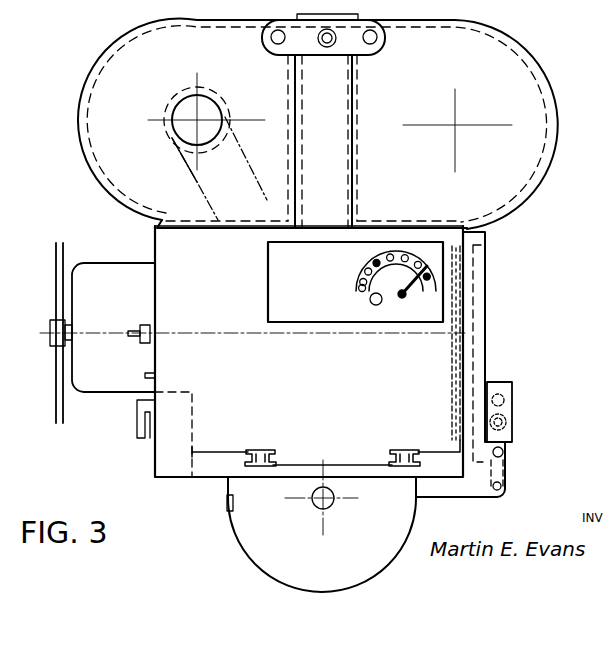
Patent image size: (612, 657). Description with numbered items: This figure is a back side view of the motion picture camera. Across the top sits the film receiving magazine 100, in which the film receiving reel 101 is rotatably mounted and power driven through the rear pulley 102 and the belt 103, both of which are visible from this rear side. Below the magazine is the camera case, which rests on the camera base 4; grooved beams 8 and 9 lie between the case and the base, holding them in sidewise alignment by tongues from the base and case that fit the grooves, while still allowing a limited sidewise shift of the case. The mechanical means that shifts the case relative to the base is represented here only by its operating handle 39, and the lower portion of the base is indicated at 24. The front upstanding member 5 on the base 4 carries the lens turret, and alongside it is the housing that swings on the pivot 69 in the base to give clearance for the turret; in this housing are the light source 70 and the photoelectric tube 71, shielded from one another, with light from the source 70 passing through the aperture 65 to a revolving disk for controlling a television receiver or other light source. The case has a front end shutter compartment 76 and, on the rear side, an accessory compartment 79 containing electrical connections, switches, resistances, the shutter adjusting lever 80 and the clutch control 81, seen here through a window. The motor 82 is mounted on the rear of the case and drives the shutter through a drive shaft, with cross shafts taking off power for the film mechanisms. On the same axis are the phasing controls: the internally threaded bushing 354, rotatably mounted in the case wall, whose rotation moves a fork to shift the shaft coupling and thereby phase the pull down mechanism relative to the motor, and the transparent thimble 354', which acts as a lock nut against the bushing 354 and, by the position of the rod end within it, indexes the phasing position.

The film receiving magazine 100 is at (100, 105).
The film receiving reel 101 is at (173, 97).
The rear pulley 102 is at (168, 133).
The belt 103 is at (193, 170).
The camera base 4 is at (210, 465).
The front upstanding member 5 is at (485, 292).
The grooved beam 8 is at (406, 456).
The grooved beam 9 is at (260, 456).
The base plate 24 is at (163, 440).
The operating handle 39 is at (137, 416).
The aperture and removable cover 65 is at (498, 383).
The pivot 69 is at (504, 452).
The light source 70 is at (506, 398).
The photoelectric tube 71 is at (508, 421).
The shutter compartment 76 is at (460, 282).
The accessory compartment 79 is at (324, 320).
The shutter adjusting lever 80 is at (426, 282).
The clutch control 81 is at (371, 302).
The motor 82 is at (114, 274).
The bushing 354 is at (121, 322).
The transparent thimble 354' is at (113, 350).